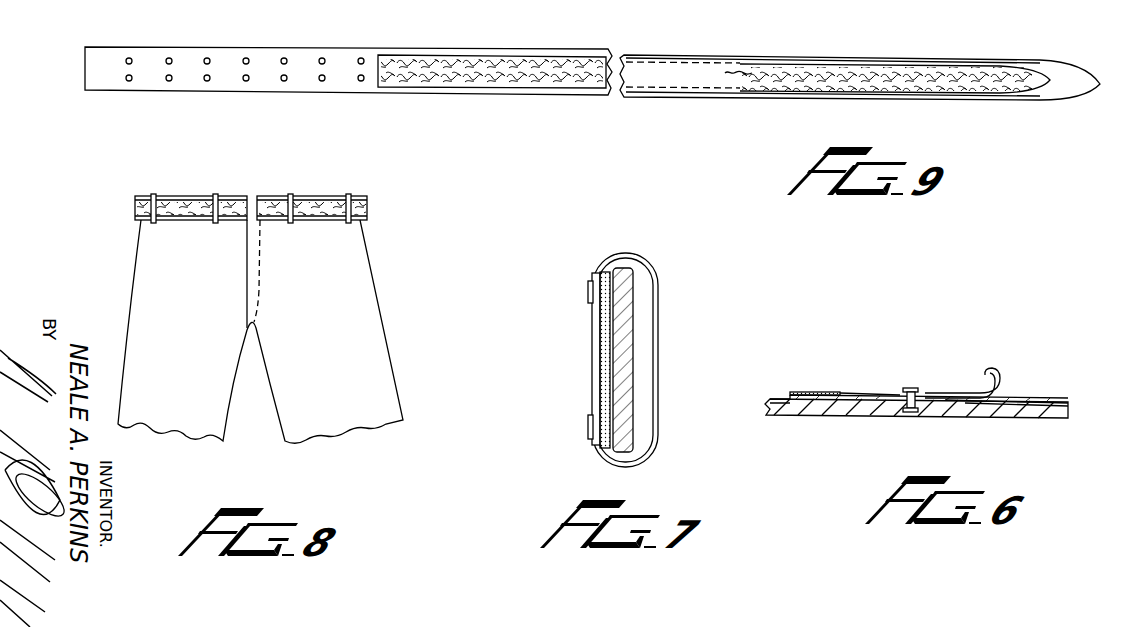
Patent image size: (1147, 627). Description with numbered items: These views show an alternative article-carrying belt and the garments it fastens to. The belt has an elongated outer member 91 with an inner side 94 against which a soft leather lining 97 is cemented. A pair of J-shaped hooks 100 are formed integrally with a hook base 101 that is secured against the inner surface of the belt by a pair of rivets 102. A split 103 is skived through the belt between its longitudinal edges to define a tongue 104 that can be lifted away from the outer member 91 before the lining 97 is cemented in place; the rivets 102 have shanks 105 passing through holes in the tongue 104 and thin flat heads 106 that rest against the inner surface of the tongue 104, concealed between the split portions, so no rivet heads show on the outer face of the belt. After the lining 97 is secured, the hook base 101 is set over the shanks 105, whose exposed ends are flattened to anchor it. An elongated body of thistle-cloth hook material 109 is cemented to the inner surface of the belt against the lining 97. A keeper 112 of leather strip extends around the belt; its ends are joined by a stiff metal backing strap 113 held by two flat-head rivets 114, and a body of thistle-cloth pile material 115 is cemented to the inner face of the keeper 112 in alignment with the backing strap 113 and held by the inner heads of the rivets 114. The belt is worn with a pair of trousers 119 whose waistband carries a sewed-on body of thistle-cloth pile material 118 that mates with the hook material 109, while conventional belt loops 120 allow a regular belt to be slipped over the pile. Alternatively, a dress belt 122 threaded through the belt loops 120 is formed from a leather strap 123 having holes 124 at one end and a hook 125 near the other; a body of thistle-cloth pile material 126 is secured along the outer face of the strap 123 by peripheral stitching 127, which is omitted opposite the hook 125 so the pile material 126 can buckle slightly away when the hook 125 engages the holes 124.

In FIG. 7, the outer member 91 is at (630, 323).
In FIG. 6, the outer member 91 is at (770, 405).
In FIG. 6, the inner side 94 is at (776, 399).
In FIG. 6, the lining 97 is at (862, 395).
In FIG. 6, the J-shaped hooks 100 is at (1000, 367).
In FIG. 6, the hook base 101 is at (880, 396).
In FIG. 6, the rivets 102 is at (920, 396).
In FIG. 6, the split 103 is at (955, 401).
In FIG. 6, the tongue 104 is at (970, 406).
In FIG. 6, the shanks 105 is at (912, 388).
In FIG. 6, the flat heads 106 is at (911, 412).
In FIG. 6, the thistle-cloth hook material 109 is at (806, 393).
In FIG. 7, the keeper 112 is at (655, 262).
In FIG. 7, the backing strap 113 is at (592, 322).
In FIG. 7, the flat-head rivets 114 is at (588, 294).
In FIG. 7, the thistle-cloth pile material 115 is at (604, 357).
In FIG. 8, the thistle-cloth pile material 118 is at (368, 212).
In FIG. 8, the trousers 119 is at (357, 273).
In FIG. 8, the belt loops 120 is at (336, 200).
In FIG. 9, the dress belt 122 is at (648, 105).
In FIG. 9, the leather strap 123 is at (371, 24).
In FIG. 9, the holes 124 is at (168, 80).
In FIG. 9, the hook 125 is at (878, 96).
In FIG. 9, the thistle-cloth pile material 126 is at (500, 62).
In FIG. 9, the peripheral stitching 127 is at (995, 86).